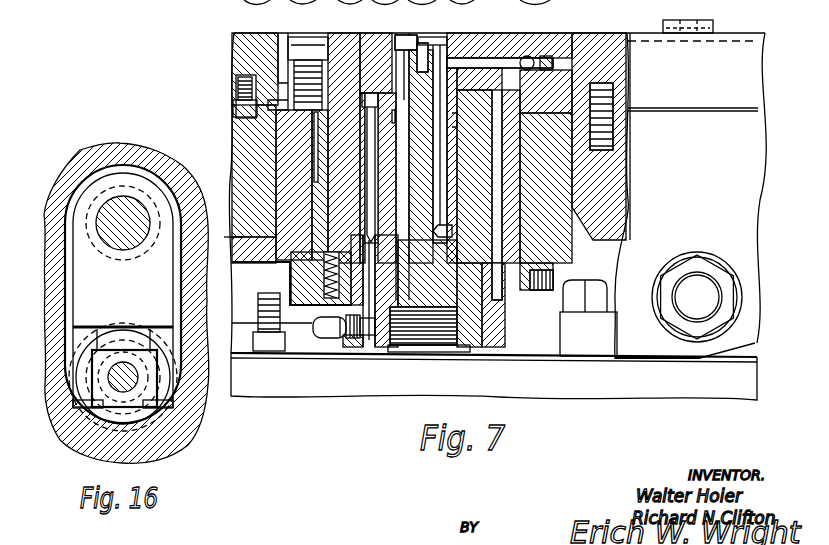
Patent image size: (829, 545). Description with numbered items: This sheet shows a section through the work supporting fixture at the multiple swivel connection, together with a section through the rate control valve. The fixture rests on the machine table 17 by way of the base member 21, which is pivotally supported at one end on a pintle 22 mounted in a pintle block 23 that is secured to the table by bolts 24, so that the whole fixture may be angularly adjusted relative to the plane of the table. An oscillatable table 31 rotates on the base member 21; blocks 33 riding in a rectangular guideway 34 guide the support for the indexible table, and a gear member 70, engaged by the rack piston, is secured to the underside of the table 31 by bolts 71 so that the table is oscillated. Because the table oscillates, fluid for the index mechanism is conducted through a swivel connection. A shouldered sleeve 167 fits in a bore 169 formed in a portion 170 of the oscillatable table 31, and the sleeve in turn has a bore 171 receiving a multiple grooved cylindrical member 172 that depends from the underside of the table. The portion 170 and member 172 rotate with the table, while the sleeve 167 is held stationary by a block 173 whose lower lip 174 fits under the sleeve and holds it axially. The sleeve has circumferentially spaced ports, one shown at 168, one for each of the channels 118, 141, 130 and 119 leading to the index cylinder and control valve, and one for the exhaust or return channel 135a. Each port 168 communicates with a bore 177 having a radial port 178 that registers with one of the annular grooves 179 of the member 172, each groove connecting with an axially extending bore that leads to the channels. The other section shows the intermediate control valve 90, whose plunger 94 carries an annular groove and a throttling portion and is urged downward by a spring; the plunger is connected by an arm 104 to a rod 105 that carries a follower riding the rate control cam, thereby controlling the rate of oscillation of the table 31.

In FIG. 7, the table 17 is at (728, 386).
In FIG. 7, the base member 21 is at (737, 183).
In FIG. 7, the pintle 22 is at (699, 296).
In FIG. 7, the pintle block 23 is at (593, 350).
In FIG. 7, the bolts 24 is at (600, 300).
In FIG. 7, the oscillatable table 31 is at (232, 72).
In FIG. 7, the blocks 33 is at (707, 25).
In FIG. 7, the rectangular guideway 34 is at (240, 37).
In FIG. 7, the gear member 70 is at (627, 158).
In FIG. 7, the bolts 71 is at (632, 75).
In FIG. 7, the channel 118 is at (267, 6).
In FIG. 7, the channel 119 is at (548, 3).
In FIG. 7, the channel 130 is at (462, 4).
In FIG. 7, the exhaust or return channel 135a is at (397, 6).
In FIG. 7, the channel 141 is at (345, 4).
In FIG. 7, the shouldered sleeve 167 is at (538, 292).
In FIG. 7, the port 168 is at (370, 347).
In FIG. 7, the bore 169 is at (507, 307).
In FIG. 7, the portion of the oscillatable table 170 is at (338, 306).
In FIG. 7, the bore 171 is at (482, 345).
In FIG. 7, the multiple grooved cylindrical member 172 is at (392, 32).
In FIG. 7, the block 173 is at (303, 342).
In FIG. 7, the lower lip 174 is at (352, 340).
In FIG. 7, the bore 177 is at (418, 348).
In FIG. 7, the radial port 178 is at (328, 268).
In FIG. 7, the annular grooves 179 is at (450, 231).
In FIG. 16, the intermediate control valve 90 is at (107, 420).
In FIG. 16, the control valve plunger 94 is at (131, 410).
In FIG. 16, the arm 104 is at (88, 267).
In FIG. 16, the rod 105 is at (122, 190).